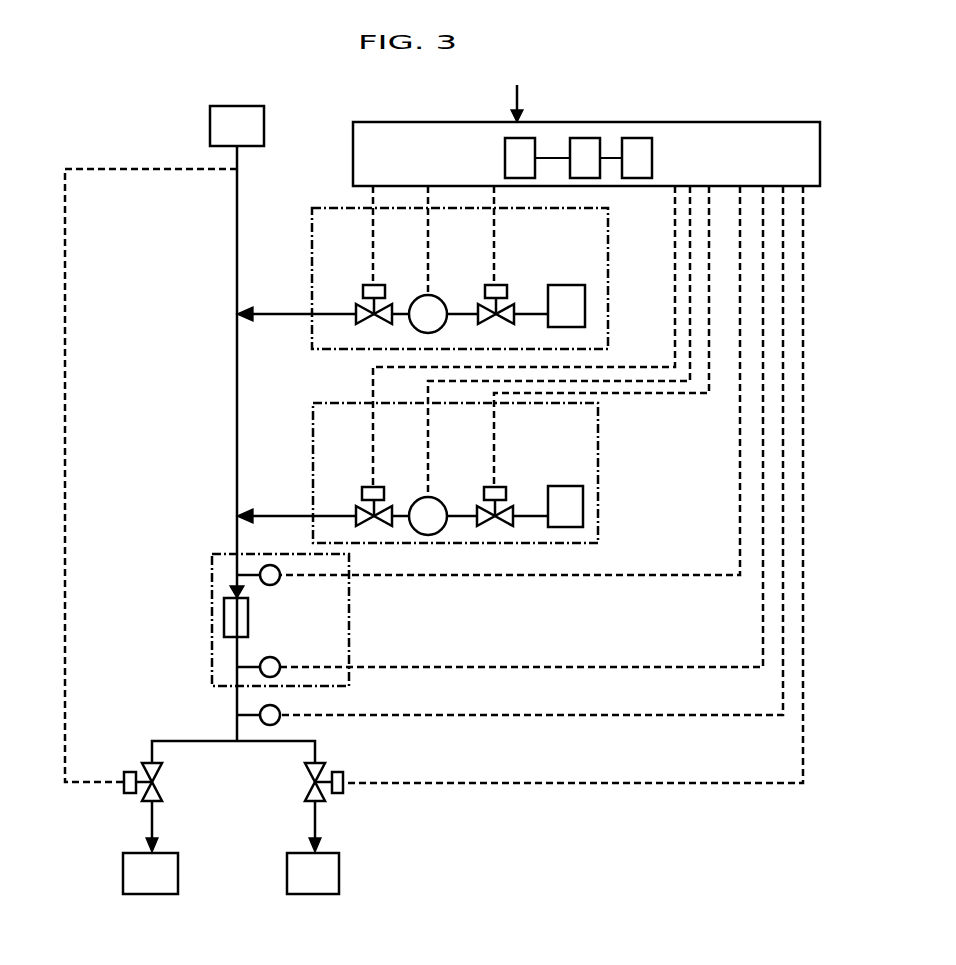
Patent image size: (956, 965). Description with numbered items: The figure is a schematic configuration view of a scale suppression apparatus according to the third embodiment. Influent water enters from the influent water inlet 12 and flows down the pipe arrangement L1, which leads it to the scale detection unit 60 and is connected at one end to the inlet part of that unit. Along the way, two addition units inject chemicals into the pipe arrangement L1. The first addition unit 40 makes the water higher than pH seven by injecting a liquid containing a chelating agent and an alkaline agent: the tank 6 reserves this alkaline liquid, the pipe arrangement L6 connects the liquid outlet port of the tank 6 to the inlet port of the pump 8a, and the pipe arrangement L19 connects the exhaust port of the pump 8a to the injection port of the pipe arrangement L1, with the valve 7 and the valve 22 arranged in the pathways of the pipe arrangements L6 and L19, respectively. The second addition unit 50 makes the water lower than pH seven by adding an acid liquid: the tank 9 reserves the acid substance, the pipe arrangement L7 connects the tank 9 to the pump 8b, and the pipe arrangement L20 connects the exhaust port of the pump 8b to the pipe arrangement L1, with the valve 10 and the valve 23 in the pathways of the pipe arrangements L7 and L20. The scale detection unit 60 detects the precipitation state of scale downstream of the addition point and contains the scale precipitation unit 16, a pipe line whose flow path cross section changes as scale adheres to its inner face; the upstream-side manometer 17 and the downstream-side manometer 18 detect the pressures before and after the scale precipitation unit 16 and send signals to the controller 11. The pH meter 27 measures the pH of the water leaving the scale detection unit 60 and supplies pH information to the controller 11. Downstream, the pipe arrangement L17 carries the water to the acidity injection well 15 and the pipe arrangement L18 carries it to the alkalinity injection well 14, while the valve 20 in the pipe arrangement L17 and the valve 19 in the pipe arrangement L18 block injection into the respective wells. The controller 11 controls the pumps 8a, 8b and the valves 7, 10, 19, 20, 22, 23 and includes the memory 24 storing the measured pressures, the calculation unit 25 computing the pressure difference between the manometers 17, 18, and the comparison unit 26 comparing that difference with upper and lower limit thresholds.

The controller 11 is at (440, 122).
The memory 24 is at (530, 138).
The calculation unit 25 is at (585, 138).
The comparison unit 26 is at (637, 138).
The influent water inlet 12 is at (264, 128).
The pipe arrangement L1 is at (235, 228).
The first addition unit 40 is at (607, 269).
The pipe arrangement L19 is at (342, 313).
The valve 22 is at (385, 290).
The pump 8a is at (442, 298).
The valve 7 is at (507, 290).
The pipe arrangement L6 is at (527, 313).
The tank 6 is at (563, 284).
The second addition unit 50 is at (598, 472).
The pipe arrangement L20 is at (342, 515).
The valve 23 is at (385, 490).
The pump 8b is at (442, 500).
The valve 10 is at (500, 488).
The pipe arrangement L7 is at (527, 515).
The tank 9 is at (563, 486).
The scale detection unit 60 is at (212, 593).
The upstream-side manometer 17 is at (278, 583).
The scale precipitation unit 16 is at (249, 618).
The downstream-side manometer 18 is at (278, 658).
The pH meter 27 is at (280, 708).
The pipe arrangement L17 is at (152, 753).
The pipe arrangement L18 is at (315, 755).
The valve 20 is at (123, 773).
The valve 19 is at (345, 775).
The acidity injection well 15 is at (178, 880).
The alkalinity injection well 14 is at (339, 880).